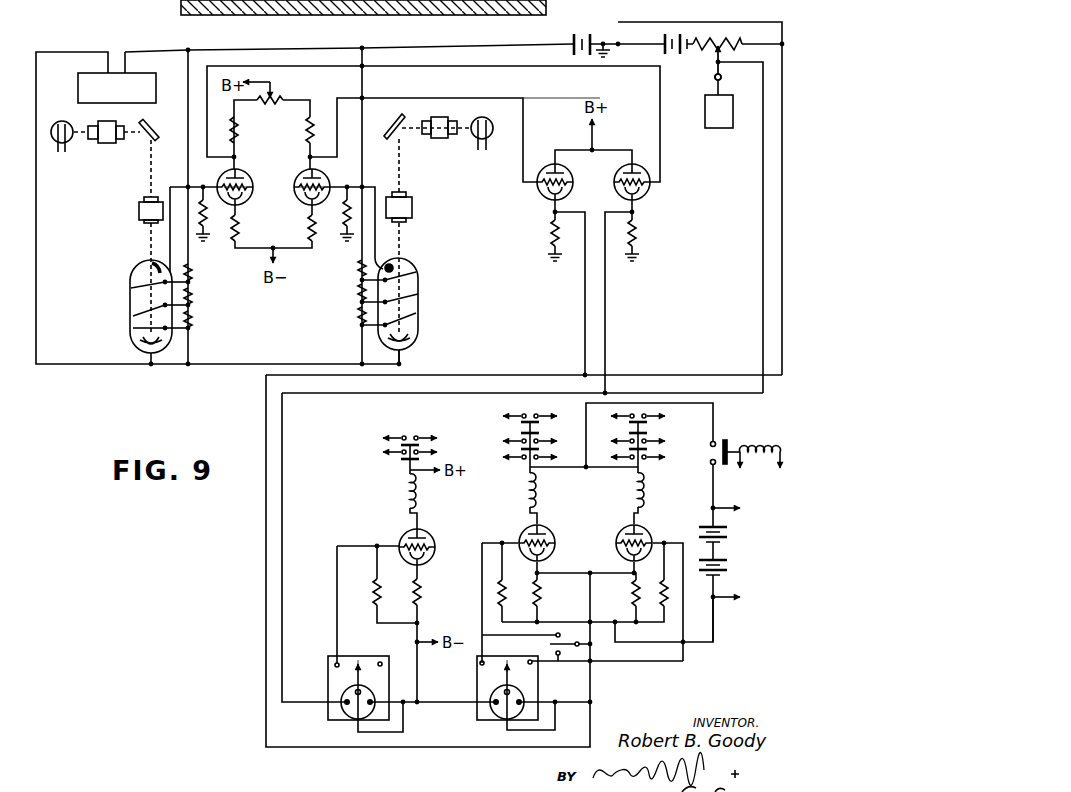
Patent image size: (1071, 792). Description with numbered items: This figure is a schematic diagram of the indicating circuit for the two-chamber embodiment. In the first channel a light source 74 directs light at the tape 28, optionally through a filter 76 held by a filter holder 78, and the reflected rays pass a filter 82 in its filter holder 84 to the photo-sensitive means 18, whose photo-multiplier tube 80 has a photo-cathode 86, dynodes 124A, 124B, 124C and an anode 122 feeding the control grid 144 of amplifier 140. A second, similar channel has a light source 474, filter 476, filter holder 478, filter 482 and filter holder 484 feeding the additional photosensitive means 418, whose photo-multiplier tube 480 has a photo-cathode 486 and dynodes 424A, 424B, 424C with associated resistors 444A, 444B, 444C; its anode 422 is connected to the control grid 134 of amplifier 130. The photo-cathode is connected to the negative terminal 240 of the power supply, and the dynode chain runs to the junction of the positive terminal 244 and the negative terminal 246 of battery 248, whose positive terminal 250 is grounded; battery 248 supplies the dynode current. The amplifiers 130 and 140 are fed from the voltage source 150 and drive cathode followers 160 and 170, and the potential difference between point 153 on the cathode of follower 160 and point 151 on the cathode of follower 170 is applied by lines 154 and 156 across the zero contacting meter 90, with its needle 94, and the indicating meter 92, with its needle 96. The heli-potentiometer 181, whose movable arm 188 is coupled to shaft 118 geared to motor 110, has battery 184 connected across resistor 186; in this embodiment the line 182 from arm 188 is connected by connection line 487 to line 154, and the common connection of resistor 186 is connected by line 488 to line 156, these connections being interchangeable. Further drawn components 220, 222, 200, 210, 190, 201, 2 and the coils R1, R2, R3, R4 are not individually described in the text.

The negative terminal 240 is at (217, 198).
The positive terminal 244 is at (151, 51).
The light source 474 is at (67, 123).
The filter 476 is at (96, 146).
The filter holder 478 is at (125, 149).
The tape 28 is at (304, 217).
The filter 482 is at (127, 205).
The filter holder 484 is at (130, 214).
The anode 422 is at (136, 254).
The photosensitive means 418 is at (116, 313).
The dynode 424C is at (141, 274).
The dynode 424B is at (135, 313).
The dynode 424A is at (135, 329).
The photo-multiplier tube 480 is at (122, 347).
The photo-cathode 486 is at (133, 349).
The resistor 444C is at (212, 271).
The resistor 444B is at (211, 295).
The resistor 444A is at (211, 318).
The line 182 is at (284, 103).
The amplifier 130 is at (251, 176).
The control grid 134 is at (255, 176).
The amplifier 140 is at (328, 179).
The control grid 144 is at (291, 192).
The filter 76 is at (430, 140).
The filter holder 78 is at (447, 142).
The light source 74 is at (495, 126).
The filter 82 is at (418, 203).
The filter holder 84 is at (415, 210).
The anode 122 is at (413, 254).
The dynode 124C is at (425, 272).
The dynode 124B is at (427, 297).
The dynode 124A is at (426, 314).
The photo-sensitive means 18 is at (425, 312).
The photo-multiplier tube 80 is at (422, 329).
The photo-cathode 86 is at (417, 346).
The line 154 is at (524, 365).
The line 156 is at (522, 407).
The relay switch 220 is at (377, 451).
The relay coil R4 is at (440, 491).
The electron tube 222 is at (435, 540).
The relay coil R1 is at (514, 490).
The electron tube 200 is at (524, 487).
The relay coil R2 is at (661, 488).
The electron tube 210 is at (647, 487).
The switch 190 is at (754, 433).
The relay coil R3 is at (759, 447).
The source of voltage 150 is at (754, 553).
The indicating meter 92 is at (364, 675).
The needle 96 is at (373, 677).
The zero contacting meter 90 is at (491, 688).
The needle 94 is at (522, 676).
The contact 201 is at (543, 646).
The positive terminal 250 is at (576, 29).
The battery 248 is at (611, 22).
The negative terminal 246 is at (556, 45).
The source of voltage 184 is at (664, 42).
The resistor 186 is at (727, 35).
The movable arm 188 is at (697, 66).
The heli-potentiometer 181 is at (694, 83).
The shaft 118 is at (738, 81).
The motor 110 is at (705, 117).
The lead 2 is at (561, 82).
The cathode follower 160 is at (555, 166).
The cathode follower 170 is at (641, 169).
The point 153 is at (532, 224).
The point 151 is at (659, 224).
The connection line 487 is at (740, 227).
The line 488 is at (717, 198).